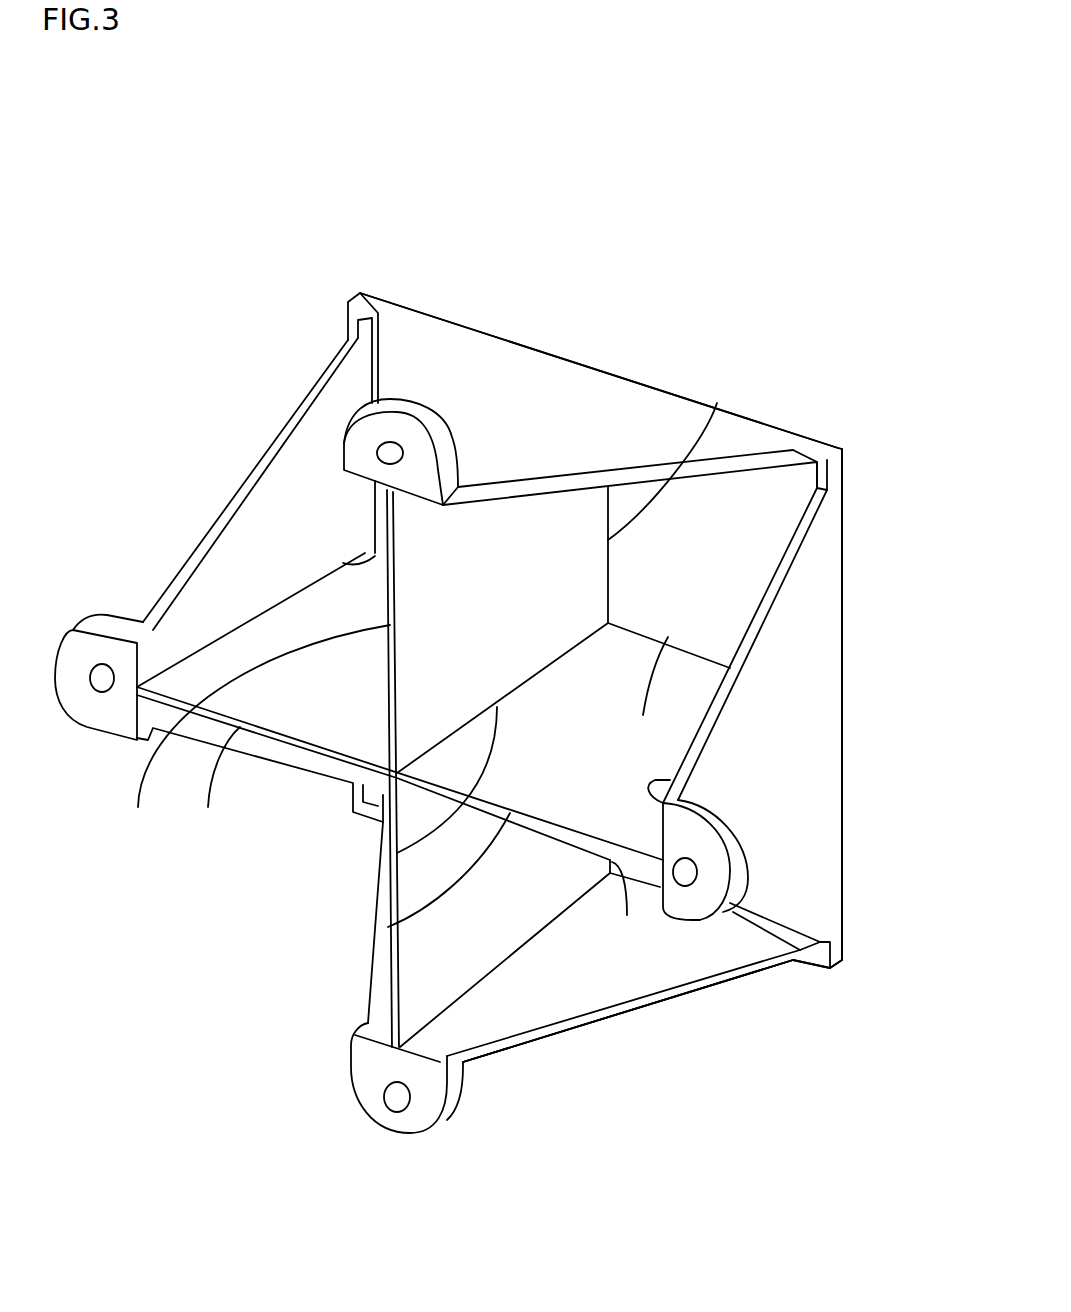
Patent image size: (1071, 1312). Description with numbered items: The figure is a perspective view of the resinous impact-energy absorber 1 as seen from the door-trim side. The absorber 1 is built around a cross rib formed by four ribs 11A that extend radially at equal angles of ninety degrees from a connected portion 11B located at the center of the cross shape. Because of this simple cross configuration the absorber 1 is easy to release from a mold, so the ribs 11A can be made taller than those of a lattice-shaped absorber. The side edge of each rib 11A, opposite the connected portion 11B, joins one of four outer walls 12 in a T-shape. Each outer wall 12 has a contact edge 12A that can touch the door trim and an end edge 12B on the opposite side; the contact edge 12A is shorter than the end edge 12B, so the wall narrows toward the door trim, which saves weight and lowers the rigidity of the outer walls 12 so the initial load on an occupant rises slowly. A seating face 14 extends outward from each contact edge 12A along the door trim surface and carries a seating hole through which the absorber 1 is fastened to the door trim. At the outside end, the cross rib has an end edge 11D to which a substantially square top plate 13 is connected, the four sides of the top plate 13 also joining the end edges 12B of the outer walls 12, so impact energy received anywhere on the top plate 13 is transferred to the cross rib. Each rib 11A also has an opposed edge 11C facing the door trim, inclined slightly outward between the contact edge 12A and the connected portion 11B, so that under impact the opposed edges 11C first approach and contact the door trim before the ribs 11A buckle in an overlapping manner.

The resinous impact-energy absorber 1 is at (486, 161).
The rib 11A is at (540, 538).
The connected portion 11B is at (397, 853).
The opposed edge 11C is at (396, 960).
The end edge 11D is at (717, 403).
The outer wall 12 is at (540, 390).
The contact edge 12A is at (440, 425).
The end edge 12B is at (497, 500).
The top plate 13 is at (752, 490).
The seating face 14 is at (410, 412).